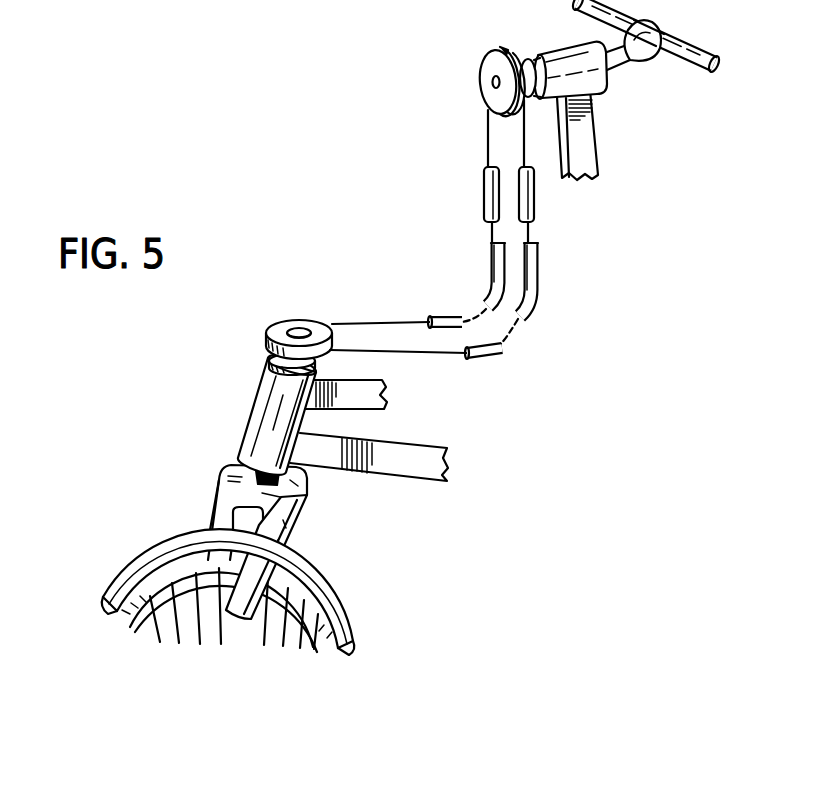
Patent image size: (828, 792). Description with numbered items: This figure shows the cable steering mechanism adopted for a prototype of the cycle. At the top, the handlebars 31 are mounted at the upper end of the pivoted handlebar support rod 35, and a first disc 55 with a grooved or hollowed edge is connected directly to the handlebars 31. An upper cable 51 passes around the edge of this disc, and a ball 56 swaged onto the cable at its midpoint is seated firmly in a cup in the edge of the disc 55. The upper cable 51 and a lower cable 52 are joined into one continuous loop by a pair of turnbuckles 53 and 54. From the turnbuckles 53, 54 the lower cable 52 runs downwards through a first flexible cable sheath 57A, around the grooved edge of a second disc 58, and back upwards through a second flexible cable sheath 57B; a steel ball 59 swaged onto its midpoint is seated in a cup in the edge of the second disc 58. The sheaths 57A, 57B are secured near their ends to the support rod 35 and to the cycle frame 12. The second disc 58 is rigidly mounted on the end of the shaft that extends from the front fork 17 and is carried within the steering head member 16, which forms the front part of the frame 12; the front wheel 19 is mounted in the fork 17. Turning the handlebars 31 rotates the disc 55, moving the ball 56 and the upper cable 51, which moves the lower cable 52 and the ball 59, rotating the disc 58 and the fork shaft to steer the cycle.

The cycle frame 12 is at (367, 400).
The steering head member 16 is at (273, 402).
The front fork 17 is at (292, 550).
The front wheel 19 is at (189, 553).
The handlebars 31 is at (661, 58).
The pivoted handlebar support rod 35 is at (587, 150).
The upper cable 51 is at (487, 142).
The lower cable 52 is at (350, 325).
The turnbuckle 53 is at (488, 192).
The turnbuckle 54 is at (537, 203).
The first disc 55 is at (495, 71).
The ball 56 is at (501, 49).
The first flexible cable sheath 57A is at (489, 279).
The second flexible cable sheath 57B is at (537, 283).
The second disc 58 is at (285, 327).
The steel ball 59 is at (267, 332).